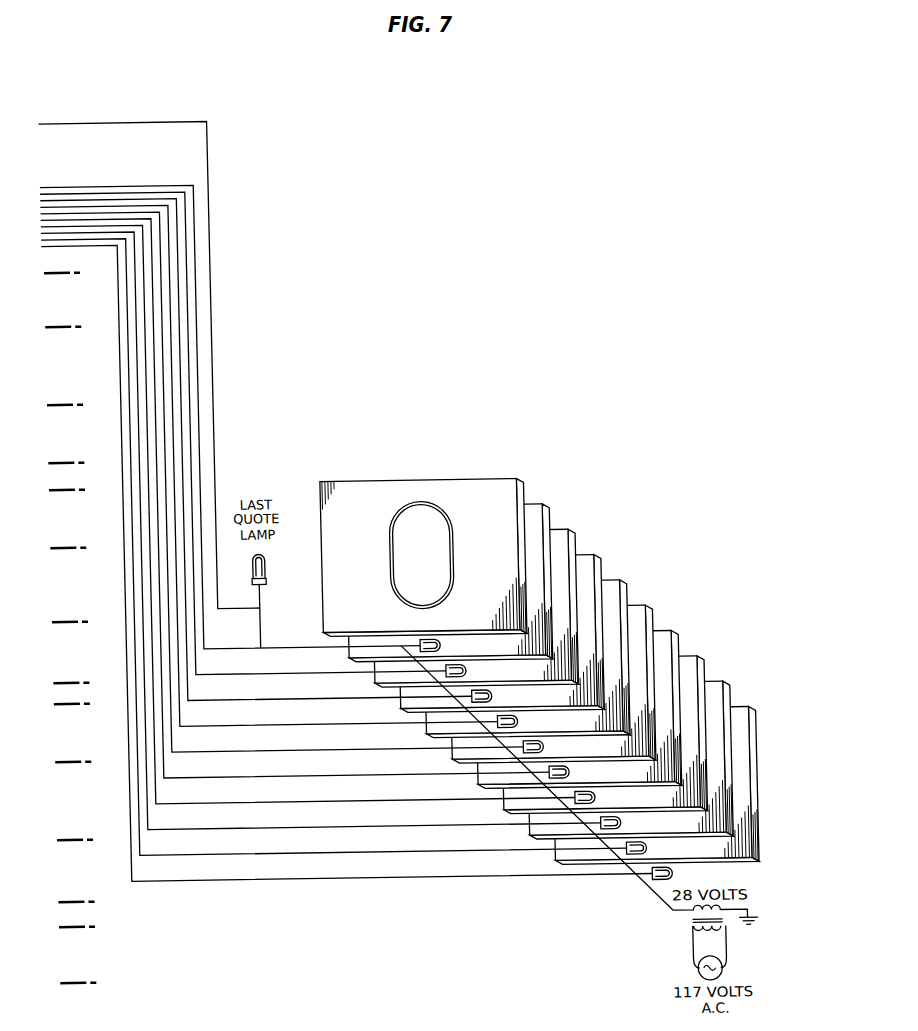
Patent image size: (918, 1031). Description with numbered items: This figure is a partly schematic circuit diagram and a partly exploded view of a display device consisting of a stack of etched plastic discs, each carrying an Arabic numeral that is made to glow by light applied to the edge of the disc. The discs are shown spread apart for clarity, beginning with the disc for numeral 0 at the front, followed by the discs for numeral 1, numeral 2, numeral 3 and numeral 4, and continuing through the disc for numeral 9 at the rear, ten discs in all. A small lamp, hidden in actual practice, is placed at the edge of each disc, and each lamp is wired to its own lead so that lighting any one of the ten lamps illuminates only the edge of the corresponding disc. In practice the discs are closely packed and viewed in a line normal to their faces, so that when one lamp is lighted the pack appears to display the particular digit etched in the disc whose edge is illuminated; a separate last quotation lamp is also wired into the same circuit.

The numeral disc for digit zero 0 is at (517, 487).
The numeral disc for digit one 1 is at (542, 513).
The numeral disc for digit two 2 is at (567, 538).
The numeral disc for digit three 3 is at (593, 564).
The numeral disc for digit four 4 is at (618, 590).
The numeral disc for digit nine 9 is at (744, 718).